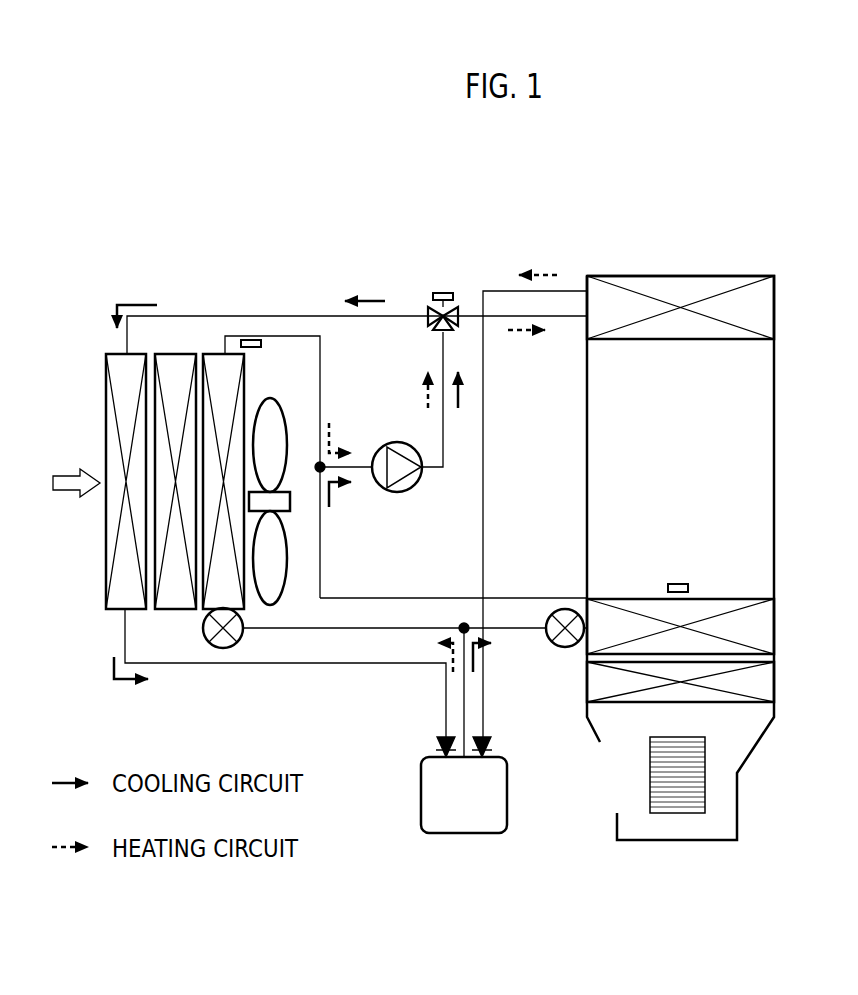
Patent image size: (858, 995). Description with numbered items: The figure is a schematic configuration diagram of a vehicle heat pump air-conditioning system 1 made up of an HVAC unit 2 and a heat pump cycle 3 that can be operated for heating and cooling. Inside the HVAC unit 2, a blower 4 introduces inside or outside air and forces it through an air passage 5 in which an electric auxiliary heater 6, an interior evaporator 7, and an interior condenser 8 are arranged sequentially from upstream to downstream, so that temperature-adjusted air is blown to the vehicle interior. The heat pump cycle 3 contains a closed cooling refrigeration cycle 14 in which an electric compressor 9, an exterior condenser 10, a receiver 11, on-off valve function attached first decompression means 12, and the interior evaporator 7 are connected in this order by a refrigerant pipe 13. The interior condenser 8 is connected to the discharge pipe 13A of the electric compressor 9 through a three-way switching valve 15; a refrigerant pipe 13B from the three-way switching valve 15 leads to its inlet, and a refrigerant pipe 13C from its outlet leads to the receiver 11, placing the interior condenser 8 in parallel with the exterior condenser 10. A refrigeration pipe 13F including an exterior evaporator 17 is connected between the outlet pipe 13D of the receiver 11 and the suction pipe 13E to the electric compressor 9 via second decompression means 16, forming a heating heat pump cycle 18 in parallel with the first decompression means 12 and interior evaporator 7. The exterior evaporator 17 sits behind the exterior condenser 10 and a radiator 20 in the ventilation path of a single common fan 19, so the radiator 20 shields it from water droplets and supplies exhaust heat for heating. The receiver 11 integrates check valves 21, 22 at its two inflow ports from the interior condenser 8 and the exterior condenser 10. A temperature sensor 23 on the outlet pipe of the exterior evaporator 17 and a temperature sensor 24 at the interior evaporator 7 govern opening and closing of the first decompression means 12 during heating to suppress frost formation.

The vehicle heat pump air-conditioning system 1 is at (518, 238).
The HVAC unit 2 is at (780, 418).
The heat pump cycle 3 is at (299, 282).
The blower 4 is at (650, 785).
The air passage 5 is at (762, 490).
The electric auxiliary heater 6 is at (760, 682).
The interior evaporator 7 is at (762, 628).
The interior condenser 8 is at (764, 312).
The electric compressor 9 is at (395, 494).
The exterior condenser 10 is at (106, 408).
The receiver 11 is at (421, 793).
The first decompression means 12 is at (566, 648).
The refrigerant pipe 13 is at (206, 316).
The discharge pipe 13A is at (443, 421).
The refrigerant pipe 13B is at (497, 318).
The refrigerant pipe 13C is at (483, 441).
The outlet pipe 13D is at (463, 698).
The suction pipe 13E is at (445, 598).
The refrigeration pipe 13F is at (312, 632).
The cooling refrigeration cycle 14 is at (185, 670).
The three-way switching valve 15 is at (443, 293).
The second decompression means 16 is at (223, 648).
The exterior evaporator 17 is at (230, 373).
The heating heat pump cycle 18 is at (325, 368).
The fan 19 is at (288, 555).
The radiator 20 is at (168, 545).
The check valve 21 is at (436, 748).
The check valve 22 is at (490, 748).
The temperature sensor 23 is at (252, 340).
The temperature sensor 24 is at (676, 584).